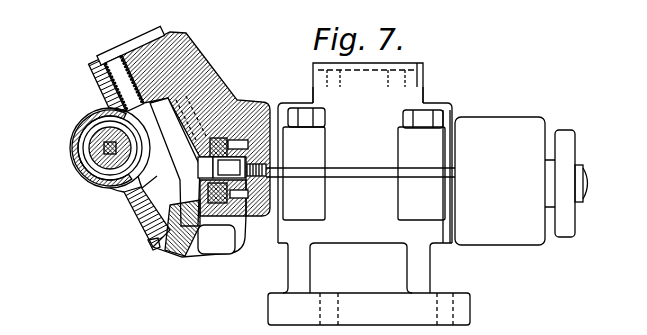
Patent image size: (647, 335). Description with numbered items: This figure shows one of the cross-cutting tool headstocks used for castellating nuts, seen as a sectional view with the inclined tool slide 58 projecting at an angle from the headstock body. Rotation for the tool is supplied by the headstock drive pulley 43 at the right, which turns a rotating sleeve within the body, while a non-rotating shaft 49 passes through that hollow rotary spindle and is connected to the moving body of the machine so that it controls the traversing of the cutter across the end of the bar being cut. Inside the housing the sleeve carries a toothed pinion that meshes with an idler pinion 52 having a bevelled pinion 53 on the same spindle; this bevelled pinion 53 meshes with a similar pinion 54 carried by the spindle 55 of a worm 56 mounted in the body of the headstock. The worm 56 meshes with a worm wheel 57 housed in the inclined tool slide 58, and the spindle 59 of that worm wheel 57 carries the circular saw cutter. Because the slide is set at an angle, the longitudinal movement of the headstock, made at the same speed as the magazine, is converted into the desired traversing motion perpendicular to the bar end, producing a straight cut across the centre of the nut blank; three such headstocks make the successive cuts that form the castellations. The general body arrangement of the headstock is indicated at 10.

The housing 10 is at (72, 170).
The pulley 43 is at (507, 133).
The non-rotating shaft 49 is at (580, 162).
The idler pinion 52 is at (243, 228).
The bevelled pinion 53 is at (228, 138).
The pinion 54 is at (147, 227).
The spindle 55 is at (123, 77).
The worm 56 is at (125, 192).
The worm wheel 57 is at (98, 125).
The inclined tool slide 58 is at (88, 75).
The spindle 59 is at (100, 145).